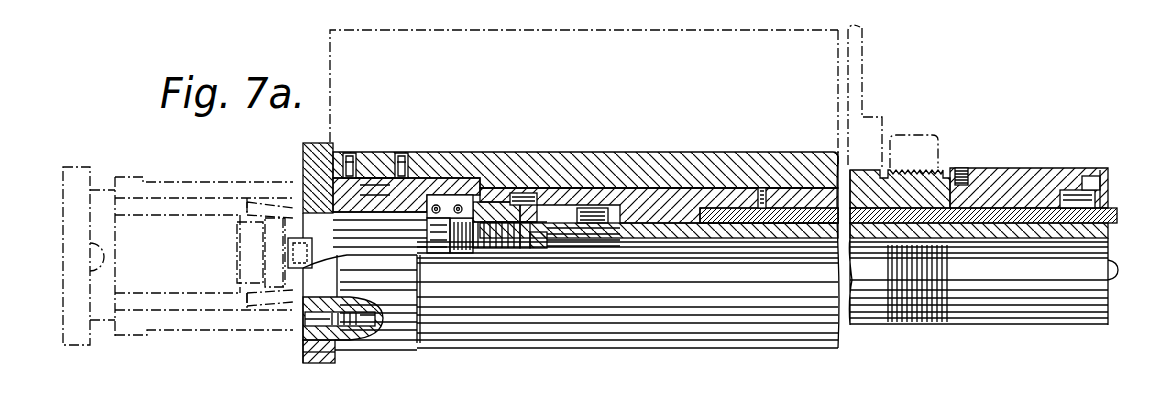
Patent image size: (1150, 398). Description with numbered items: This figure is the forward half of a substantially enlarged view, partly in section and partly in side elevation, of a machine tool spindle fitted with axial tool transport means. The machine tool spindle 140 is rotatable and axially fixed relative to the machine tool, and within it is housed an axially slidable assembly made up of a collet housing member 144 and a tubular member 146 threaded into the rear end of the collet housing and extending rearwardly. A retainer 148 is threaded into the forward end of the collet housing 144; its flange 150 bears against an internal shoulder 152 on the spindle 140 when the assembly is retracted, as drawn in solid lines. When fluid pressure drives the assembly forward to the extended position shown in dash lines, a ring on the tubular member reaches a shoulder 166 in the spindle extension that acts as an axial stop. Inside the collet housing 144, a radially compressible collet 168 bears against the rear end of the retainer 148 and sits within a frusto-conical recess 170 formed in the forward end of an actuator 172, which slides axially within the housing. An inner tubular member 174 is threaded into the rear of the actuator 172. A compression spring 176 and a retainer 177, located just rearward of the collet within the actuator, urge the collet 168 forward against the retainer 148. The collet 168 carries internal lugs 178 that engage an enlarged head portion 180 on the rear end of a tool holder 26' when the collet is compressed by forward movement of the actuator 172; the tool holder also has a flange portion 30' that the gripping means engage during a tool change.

The flange portion 30' is at (89, 235).
The tool holder 26' is at (204, 257).
The collet housing member 144 is at (204, 163).
The radially compressible collet 168 is at (255, 200).
The actuator 172 is at (283, 200).
The internal shoulder 152 is at (303, 172).
The retainer 148 is at (370, 197).
The frusto-conical recess 170 is at (440, 200).
The machine tool spindle 140 is at (586, 152).
The inner tubular member 174 is at (684, 220).
The tubular member 146 is at (802, 220).
The shoulder 166 is at (1093, 182).
The flange 150 is at (361, 289).
The internal lugs 178 is at (248, 230).
The retainer 177 is at (483, 248).
The compression spring 176 is at (505, 242).
The enlarged head portion 180 is at (272, 287).